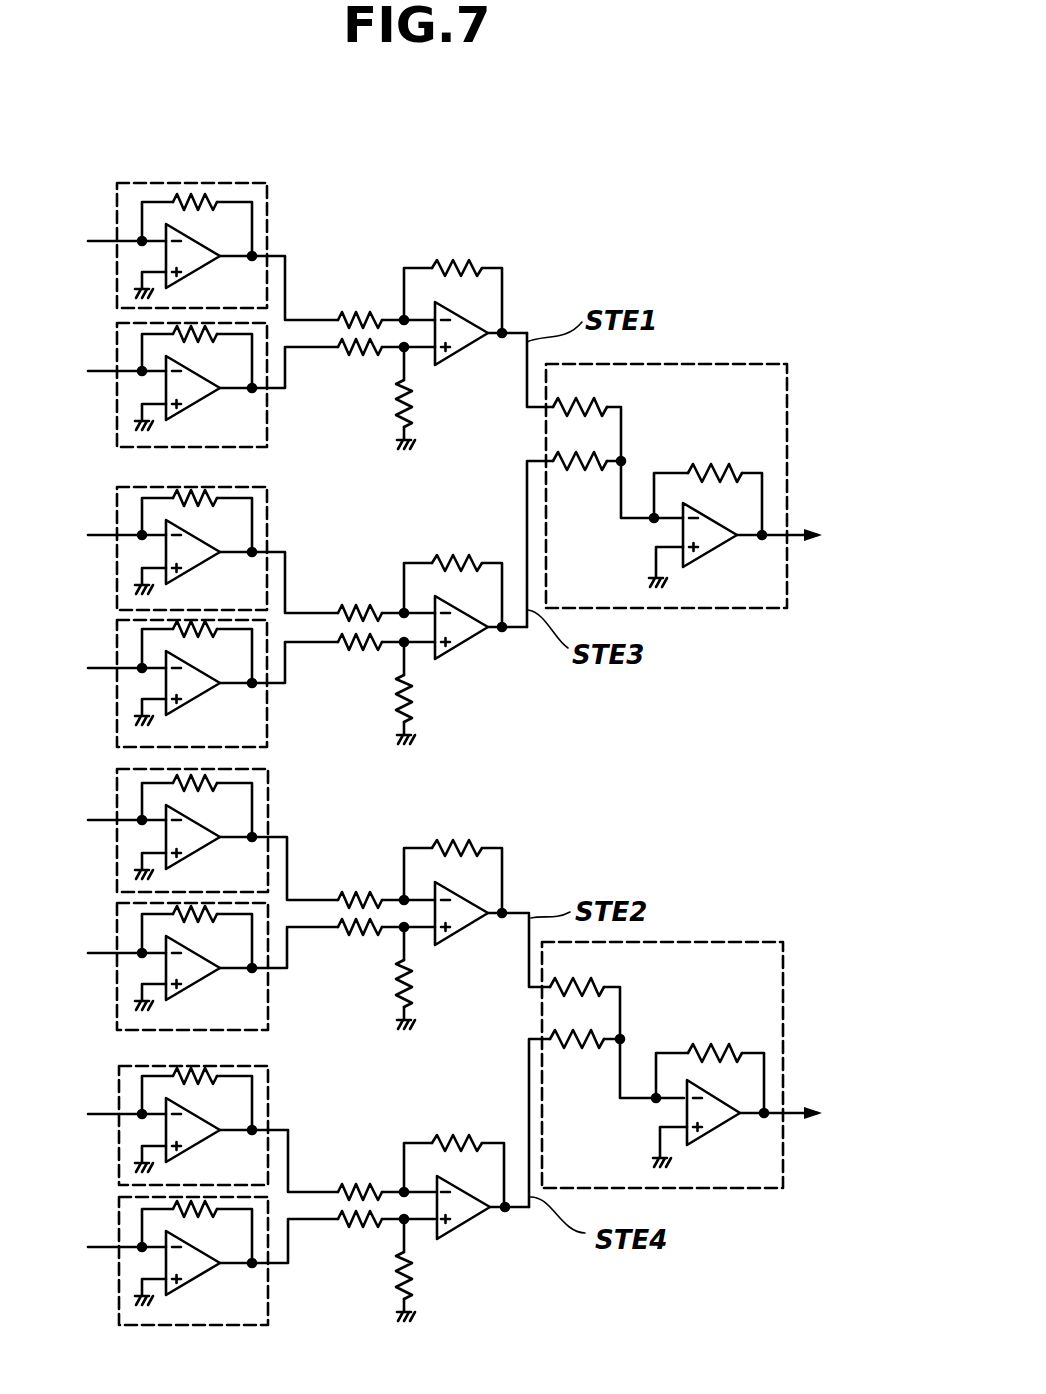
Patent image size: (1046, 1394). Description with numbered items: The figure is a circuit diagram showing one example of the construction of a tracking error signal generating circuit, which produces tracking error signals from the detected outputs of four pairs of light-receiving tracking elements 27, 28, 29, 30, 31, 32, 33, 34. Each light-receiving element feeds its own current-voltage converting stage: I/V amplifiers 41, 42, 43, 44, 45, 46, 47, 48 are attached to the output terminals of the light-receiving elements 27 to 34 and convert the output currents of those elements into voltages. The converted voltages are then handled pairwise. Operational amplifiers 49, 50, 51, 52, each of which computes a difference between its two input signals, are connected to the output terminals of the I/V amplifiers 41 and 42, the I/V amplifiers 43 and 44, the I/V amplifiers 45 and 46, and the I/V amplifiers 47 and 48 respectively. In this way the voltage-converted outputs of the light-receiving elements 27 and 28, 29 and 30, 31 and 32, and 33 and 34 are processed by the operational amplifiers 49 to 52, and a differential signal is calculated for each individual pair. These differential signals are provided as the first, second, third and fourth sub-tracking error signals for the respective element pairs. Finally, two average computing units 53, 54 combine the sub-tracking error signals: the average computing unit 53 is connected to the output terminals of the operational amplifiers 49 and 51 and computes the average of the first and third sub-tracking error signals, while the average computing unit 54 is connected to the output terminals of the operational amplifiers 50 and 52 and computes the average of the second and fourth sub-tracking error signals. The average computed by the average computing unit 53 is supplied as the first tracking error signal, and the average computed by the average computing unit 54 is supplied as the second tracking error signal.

The light-receiving tracking element 27 is at (93, 241).
The light-receiving tracking element 28 is at (102, 371).
The light-receiving tracking element 29 is at (96, 820).
The light-receiving tracking element 30 is at (100, 953).
The light-receiving tracking element 31 is at (100, 535).
The light-receiving tracking element 32 is at (100, 668).
The light-receiving tracking element 33 is at (100, 1114).
The light-receiving tracking element 34 is at (100, 1247).
The I/V amplifier 41 is at (265, 238).
The I/V amplifier 42 is at (265, 422).
The I/V amplifier 43 is at (268, 815).
The I/V amplifier 44 is at (268, 985).
The I/V amplifier 45 is at (267, 520).
The I/V amplifier 46 is at (267, 700).
The I/V amplifier 47 is at (268, 1105).
The I/V amplifier 48 is at (268, 1300).
The operational amplifier 49 is at (467, 303).
The operational amplifier 50 is at (470, 890).
The operational amplifier 51 is at (470, 642).
The operational amplifier 52 is at (483, 1215).
The average computing unit 53 is at (758, 360).
The average computing unit 54 is at (722, 940).